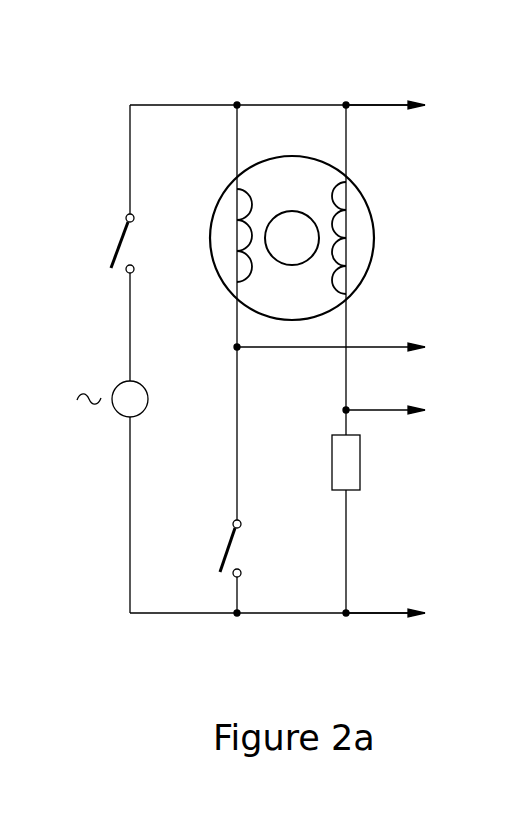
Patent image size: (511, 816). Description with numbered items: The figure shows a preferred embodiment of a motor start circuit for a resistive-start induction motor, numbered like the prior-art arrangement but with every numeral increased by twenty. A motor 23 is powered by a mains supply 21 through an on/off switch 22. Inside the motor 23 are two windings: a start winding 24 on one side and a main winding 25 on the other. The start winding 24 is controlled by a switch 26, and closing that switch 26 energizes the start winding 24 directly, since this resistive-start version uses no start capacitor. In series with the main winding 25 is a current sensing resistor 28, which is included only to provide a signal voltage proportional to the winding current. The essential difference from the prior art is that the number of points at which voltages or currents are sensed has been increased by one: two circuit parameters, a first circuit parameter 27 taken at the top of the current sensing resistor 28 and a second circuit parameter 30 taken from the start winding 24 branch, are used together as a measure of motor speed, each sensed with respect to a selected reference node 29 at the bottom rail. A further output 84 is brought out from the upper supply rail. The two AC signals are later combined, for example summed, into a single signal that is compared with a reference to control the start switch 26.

The mains supply 21 is at (118, 418).
The on/off switch 22 is at (118, 243).
The motor 23 is at (287, 155).
The start winding 24 is at (243, 222).
The main winding 25 is at (354, 203).
The switch 26 is at (240, 548).
The circuit parameter 27 is at (403, 405).
The current sensing resistor 28 is at (362, 462).
The reference node 29 is at (402, 610).
The circuit parameter 30 is at (403, 341).
The terminal 84 is at (405, 100).